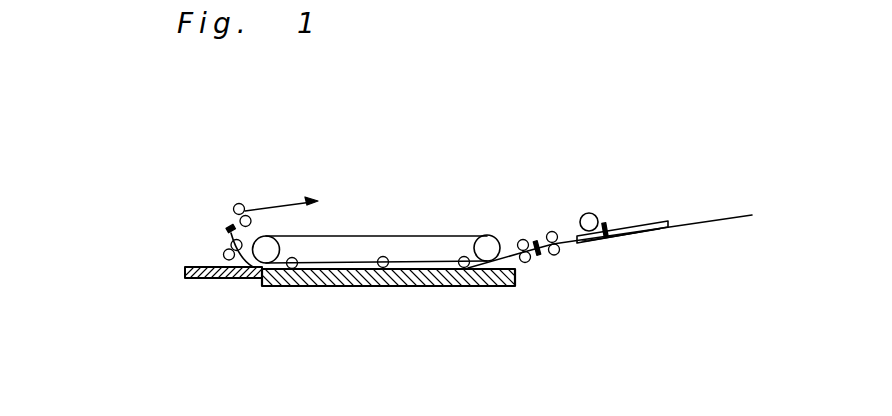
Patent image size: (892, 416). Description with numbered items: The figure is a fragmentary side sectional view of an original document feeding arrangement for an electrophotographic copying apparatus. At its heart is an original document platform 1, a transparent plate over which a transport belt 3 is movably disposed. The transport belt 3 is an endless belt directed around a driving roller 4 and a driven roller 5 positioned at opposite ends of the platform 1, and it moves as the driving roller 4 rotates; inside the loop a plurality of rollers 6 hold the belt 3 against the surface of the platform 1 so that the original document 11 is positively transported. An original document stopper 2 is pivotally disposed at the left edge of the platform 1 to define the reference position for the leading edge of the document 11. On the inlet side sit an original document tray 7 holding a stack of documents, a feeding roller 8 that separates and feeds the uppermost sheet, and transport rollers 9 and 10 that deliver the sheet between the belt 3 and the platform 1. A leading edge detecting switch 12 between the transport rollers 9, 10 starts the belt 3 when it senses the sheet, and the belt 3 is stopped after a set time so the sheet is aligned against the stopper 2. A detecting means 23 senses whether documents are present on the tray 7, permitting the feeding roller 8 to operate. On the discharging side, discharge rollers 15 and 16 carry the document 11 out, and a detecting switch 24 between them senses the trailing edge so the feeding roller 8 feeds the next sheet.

The original document platform 1 is at (388, 287).
The original document stopper 2 is at (233, 279).
The transport belt 3 is at (367, 238).
The driving roller 4 is at (266, 249).
The driven roller 5 is at (487, 247).
The rollers 6 is at (292, 257).
The original document tray 7 is at (735, 218).
The feeding roller 8 is at (589, 222).
The transport roller 9 is at (552, 237).
The transport roller 10 is at (523, 244).
The original document 11 is at (647, 222).
The original document leading edge detecting switch 12 is at (540, 254).
The discharge roller 15 is at (223, 253).
The discharge roller 16 is at (239, 203).
The detecting means 23 is at (605, 237).
The detecting switch 24 is at (226, 228).